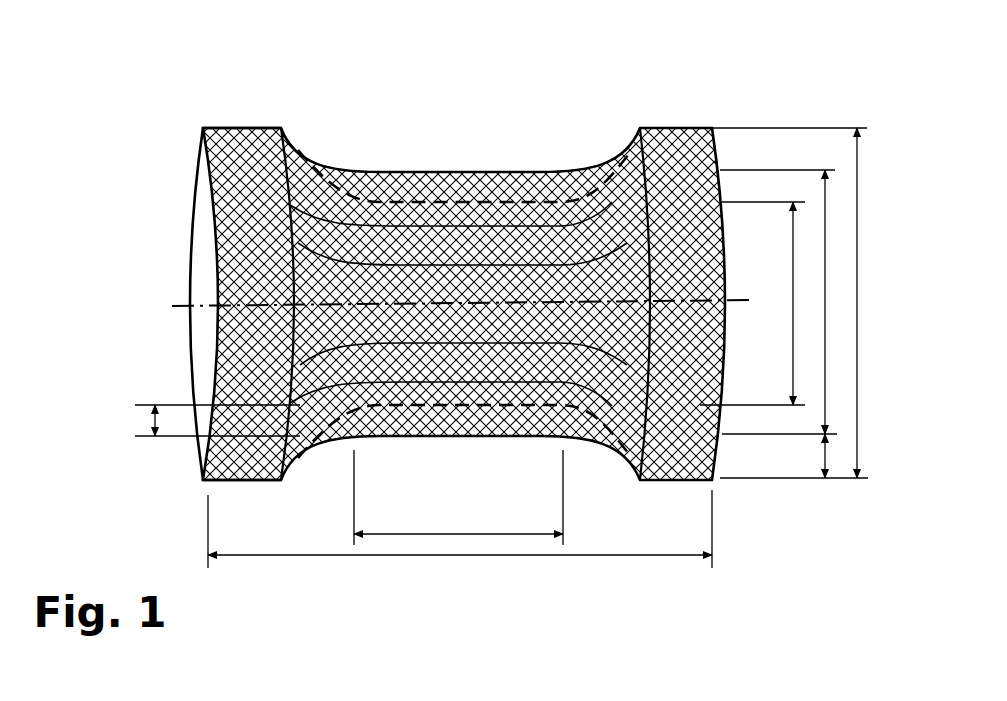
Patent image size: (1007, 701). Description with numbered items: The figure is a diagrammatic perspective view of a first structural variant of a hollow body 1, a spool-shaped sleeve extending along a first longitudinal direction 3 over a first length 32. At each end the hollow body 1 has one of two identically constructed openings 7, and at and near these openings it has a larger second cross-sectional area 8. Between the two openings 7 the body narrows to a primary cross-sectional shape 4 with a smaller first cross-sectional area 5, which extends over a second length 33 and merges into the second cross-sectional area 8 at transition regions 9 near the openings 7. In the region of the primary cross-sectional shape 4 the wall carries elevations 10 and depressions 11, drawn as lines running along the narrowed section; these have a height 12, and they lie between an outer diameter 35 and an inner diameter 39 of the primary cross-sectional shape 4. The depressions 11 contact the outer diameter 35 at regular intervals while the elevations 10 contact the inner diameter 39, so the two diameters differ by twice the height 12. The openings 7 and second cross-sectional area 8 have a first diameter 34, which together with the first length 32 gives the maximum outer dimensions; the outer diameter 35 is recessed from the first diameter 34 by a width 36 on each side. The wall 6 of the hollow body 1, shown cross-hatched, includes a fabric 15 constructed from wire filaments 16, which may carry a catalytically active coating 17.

The hollow body 1 is at (225, 96).
The first longitudinal direction 3 is at (185, 302).
The primary cross-sectional shape 4 is at (480, 440).
The first cross-sectional area 5 is at (407, 440).
The wall 6 is at (535, 440).
The openings 7 is at (205, 346).
The second cross-sectional area 8 is at (205, 215).
The transition regions 9 is at (315, 138).
The elevations 10 is at (420, 195).
The depressions 11 is at (485, 178).
The height 12 is at (130, 418).
The fabric 15 is at (640, 480).
The wire filaments 16 is at (708, 350).
The coating 17 is at (703, 405).
The first length 32 is at (250, 557).
The second length 33 is at (387, 535).
The first diameter 34 is at (857, 145).
The outer diameter 35 is at (825, 205).
The width 36 is at (825, 460).
The inner diameter 39 is at (793, 227).